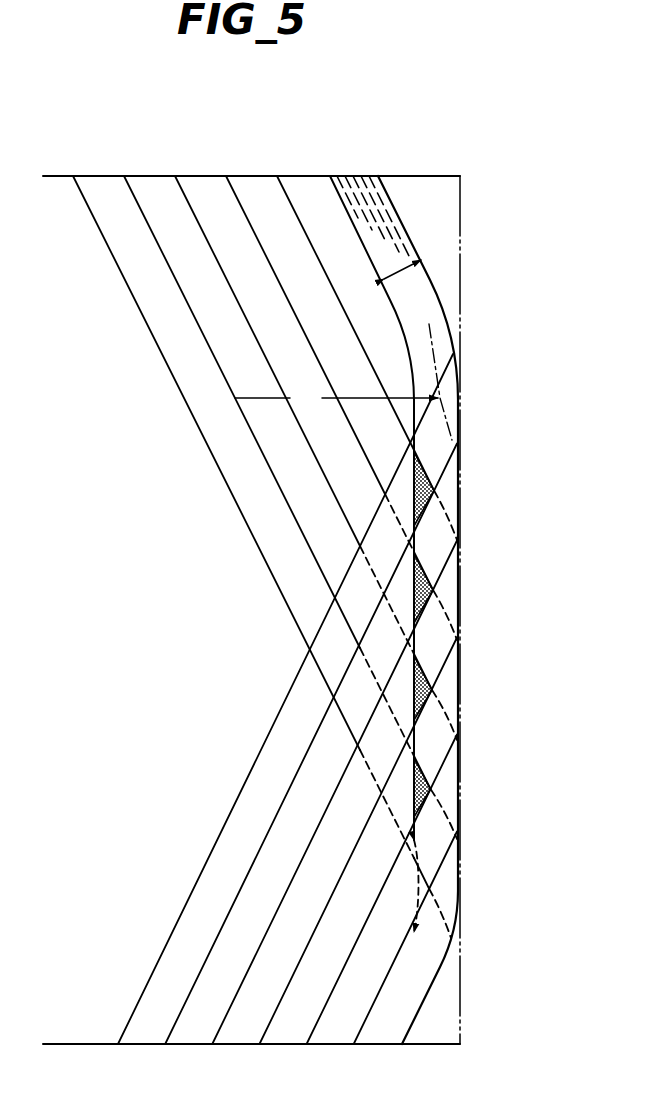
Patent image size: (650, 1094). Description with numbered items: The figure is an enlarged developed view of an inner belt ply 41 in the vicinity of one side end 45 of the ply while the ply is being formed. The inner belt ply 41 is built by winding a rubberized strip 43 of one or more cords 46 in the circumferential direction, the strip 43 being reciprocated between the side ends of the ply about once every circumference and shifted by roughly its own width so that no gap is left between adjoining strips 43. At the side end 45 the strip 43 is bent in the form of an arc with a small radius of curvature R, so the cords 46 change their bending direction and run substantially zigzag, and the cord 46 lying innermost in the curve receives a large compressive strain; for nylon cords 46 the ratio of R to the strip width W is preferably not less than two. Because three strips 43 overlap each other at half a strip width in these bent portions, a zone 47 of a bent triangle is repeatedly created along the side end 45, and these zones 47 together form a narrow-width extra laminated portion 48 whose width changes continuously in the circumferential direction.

The inner belt ply 41 is at (259, 175).
The rubberized strip 43 is at (232, 828).
The side end of the ply 45 is at (461, 232).
The cords 46 is at (372, 192).
The zone of a bent triangle 47 is at (432, 491).
The extra laminated portion 48 is at (427, 818).